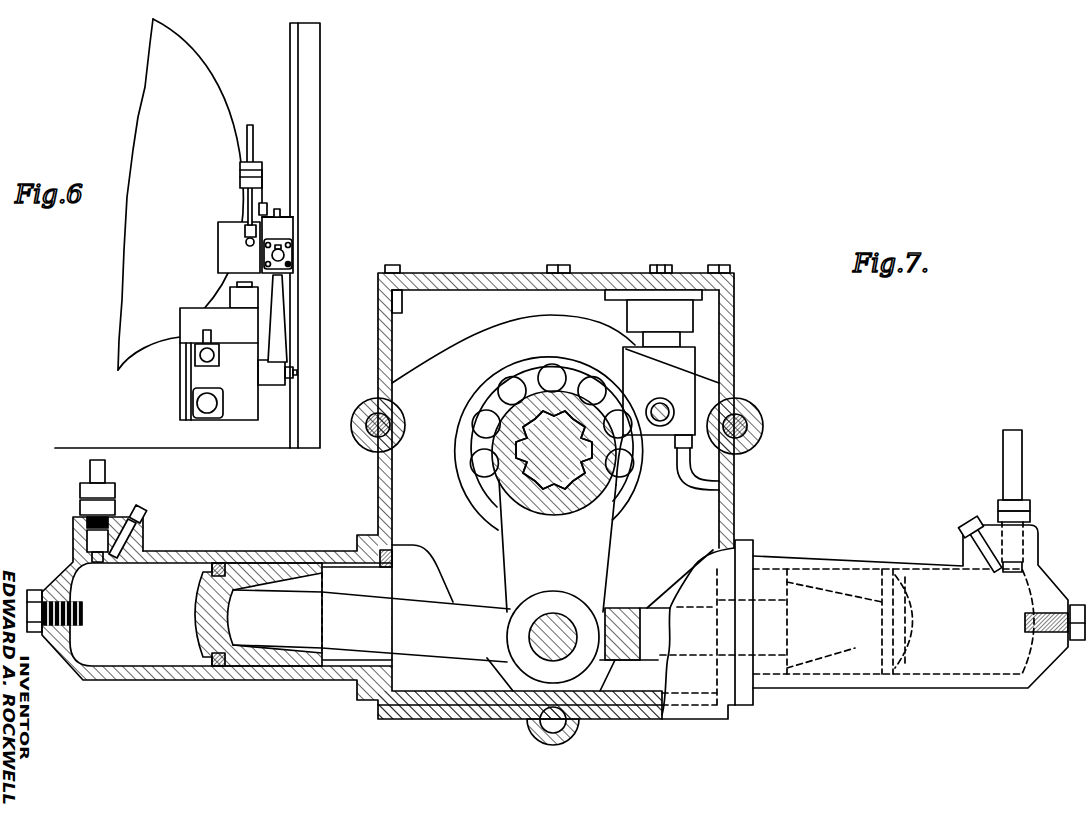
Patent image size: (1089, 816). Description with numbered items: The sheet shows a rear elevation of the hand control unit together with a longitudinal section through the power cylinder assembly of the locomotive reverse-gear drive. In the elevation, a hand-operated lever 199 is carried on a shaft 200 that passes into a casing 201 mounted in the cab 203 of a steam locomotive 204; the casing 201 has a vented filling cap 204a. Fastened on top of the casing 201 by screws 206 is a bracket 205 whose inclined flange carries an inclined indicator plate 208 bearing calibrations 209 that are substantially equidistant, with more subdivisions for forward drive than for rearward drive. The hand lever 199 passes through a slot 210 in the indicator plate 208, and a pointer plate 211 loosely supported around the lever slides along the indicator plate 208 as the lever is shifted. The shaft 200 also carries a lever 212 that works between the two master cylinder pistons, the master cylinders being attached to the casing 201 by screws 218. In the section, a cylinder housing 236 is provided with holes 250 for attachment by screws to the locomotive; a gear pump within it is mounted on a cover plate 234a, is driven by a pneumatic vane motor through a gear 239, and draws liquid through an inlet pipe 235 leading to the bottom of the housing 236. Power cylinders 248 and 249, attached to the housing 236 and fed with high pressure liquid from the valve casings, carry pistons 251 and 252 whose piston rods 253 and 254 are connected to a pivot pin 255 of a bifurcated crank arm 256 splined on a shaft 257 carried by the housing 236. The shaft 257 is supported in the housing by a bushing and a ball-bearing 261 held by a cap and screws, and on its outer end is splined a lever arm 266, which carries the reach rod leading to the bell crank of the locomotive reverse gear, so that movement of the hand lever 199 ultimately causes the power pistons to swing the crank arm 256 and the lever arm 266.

In FIG. 6, the hand-operated lever 199 is at (254, 150).
In FIG. 6, the shaft 200 is at (246, 232).
In FIG. 6, the casing 201 is at (216, 214).
In FIG. 6, the cab 203 is at (312, 93).
In FIG. 6, the steam locomotive 204 is at (248, 40).
In FIG. 6, the vented filling cap 204a is at (291, 217).
In FIG. 6, the bracket 205 is at (265, 204).
In FIG. 6, the screws 206 is at (277, 211).
In FIG. 6, the indicator plate 208 is at (240, 166).
In FIG. 6, the calibrations 209 is at (240, 172).
In FIG. 6, the slot 210 is at (244, 180).
In FIG. 6, the pointer plate 211 is at (262, 170).
In FIG. 6, the lever 212 is at (285, 256).
In FIG. 6, the screws 218 is at (291, 264).
In FIG. 7, the cover plate 234a is at (600, 279).
In FIG. 7, the inlet pipe 235 is at (716, 518).
In FIG. 7, the cylinder housing 236 is at (628, 718).
In FIG. 7, the gear 239 is at (668, 268).
In FIG. 7, the power cylinder 248 is at (885, 690).
In FIG. 6, the power cylinder 249 is at (207, 411).
In FIG. 7, the power cylinder 249 is at (231, 688).
In FIG. 7, the holes 250 is at (558, 742).
In FIG. 7, the piston 251 is at (862, 600).
In FIG. 7, the piston 252 is at (270, 570).
In FIG. 7, the piston rod 253 is at (770, 600).
In FIG. 7, the piston rod 254 is at (293, 634).
In FIG. 7, the pivot pin 255 is at (531, 637).
In FIG. 7, the bifurcated crank arm 256 is at (590, 543).
In FIG. 7, the shaft 257 is at (513, 483).
In FIG. 7, the ball-bearing 261 is at (463, 437).
In FIG. 6, the lever arm 266 is at (283, 300).